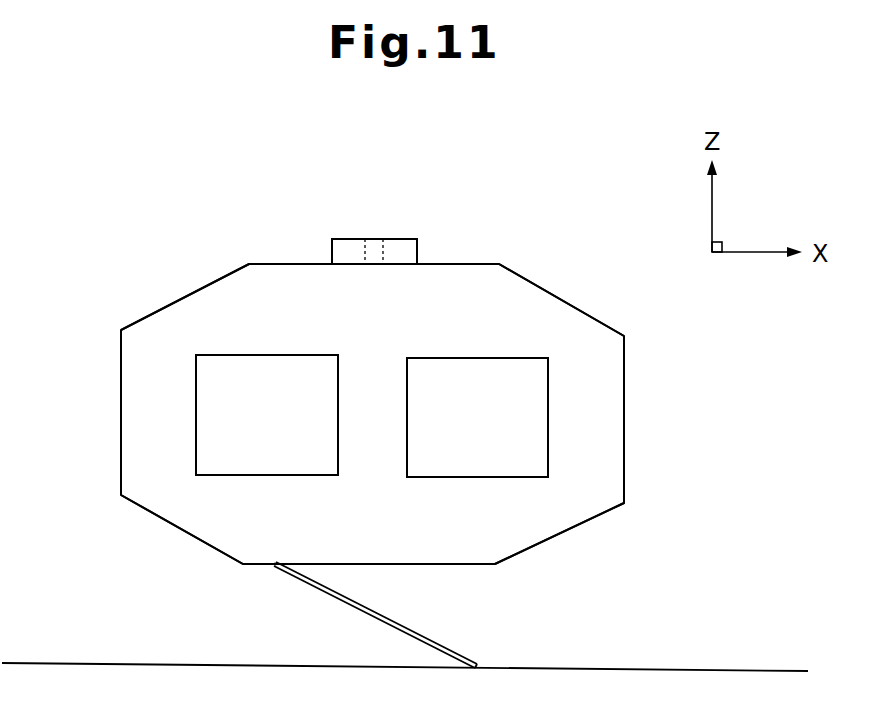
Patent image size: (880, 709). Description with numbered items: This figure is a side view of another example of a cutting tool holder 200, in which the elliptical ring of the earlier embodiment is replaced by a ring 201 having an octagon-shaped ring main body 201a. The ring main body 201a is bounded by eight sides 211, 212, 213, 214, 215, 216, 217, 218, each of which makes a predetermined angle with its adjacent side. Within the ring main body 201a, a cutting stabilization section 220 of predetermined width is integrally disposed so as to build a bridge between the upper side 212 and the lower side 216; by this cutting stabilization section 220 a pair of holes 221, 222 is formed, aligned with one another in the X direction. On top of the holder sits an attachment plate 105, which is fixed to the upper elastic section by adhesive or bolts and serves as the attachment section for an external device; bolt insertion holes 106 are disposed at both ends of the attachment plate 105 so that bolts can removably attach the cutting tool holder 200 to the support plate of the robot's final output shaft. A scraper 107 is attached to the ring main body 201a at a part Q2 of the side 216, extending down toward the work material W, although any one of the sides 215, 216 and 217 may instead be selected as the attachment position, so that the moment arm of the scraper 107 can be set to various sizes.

The cutting tool holder 200 is at (606, 228).
The ring 201 is at (624, 483).
The ring main body 201a is at (624, 424).
The side 211 is at (186, 300).
The side 212 is at (278, 274).
The side 213 is at (528, 285).
The side 214 is at (624, 374).
The side 215 is at (569, 522).
The side 216 is at (440, 561).
The side 217 is at (184, 524).
The side 218 is at (128, 416).
The cutting stabilization section 220 is at (399, 394).
The hole 221 is at (199, 397).
The hole 222 is at (546, 446).
The attachment plate 105 is at (418, 250).
The bolt insertion hole 106 is at (367, 240).
The scraper 107 is at (455, 655).
The attachment position of the scraper Q2 is at (277, 563).
The work material W is at (672, 669).